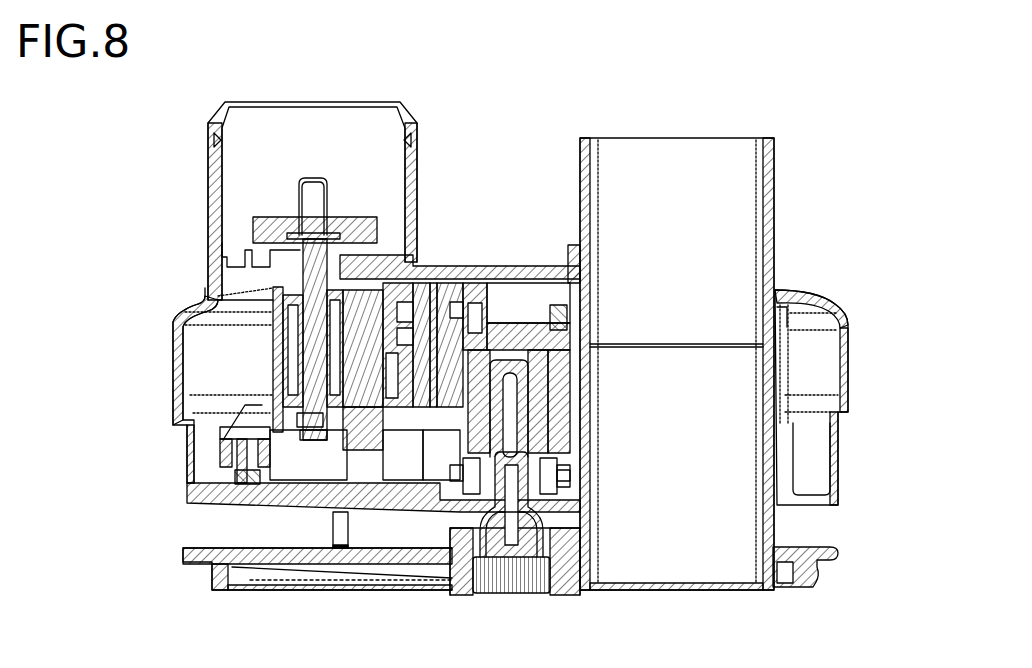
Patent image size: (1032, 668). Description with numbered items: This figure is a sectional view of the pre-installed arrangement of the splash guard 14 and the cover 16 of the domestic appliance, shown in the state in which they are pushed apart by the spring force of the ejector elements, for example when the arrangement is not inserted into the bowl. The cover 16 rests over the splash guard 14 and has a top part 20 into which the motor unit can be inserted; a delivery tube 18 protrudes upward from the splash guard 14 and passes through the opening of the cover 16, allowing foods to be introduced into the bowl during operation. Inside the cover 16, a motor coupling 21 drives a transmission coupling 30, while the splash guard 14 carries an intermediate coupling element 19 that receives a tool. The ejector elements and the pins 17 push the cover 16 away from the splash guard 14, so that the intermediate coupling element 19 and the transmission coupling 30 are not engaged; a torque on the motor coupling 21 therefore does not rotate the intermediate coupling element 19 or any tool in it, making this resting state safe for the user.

The splash guard 14 is at (837, 565).
The cover 16 is at (848, 404).
The pin 17 is at (349, 537).
The delivery tube 18 is at (775, 171).
The intermediate coupling element 19 is at (545, 521).
The top part 20 is at (417, 180).
The motor coupling 21 is at (377, 217).
The transmission coupling 30 is at (557, 381).